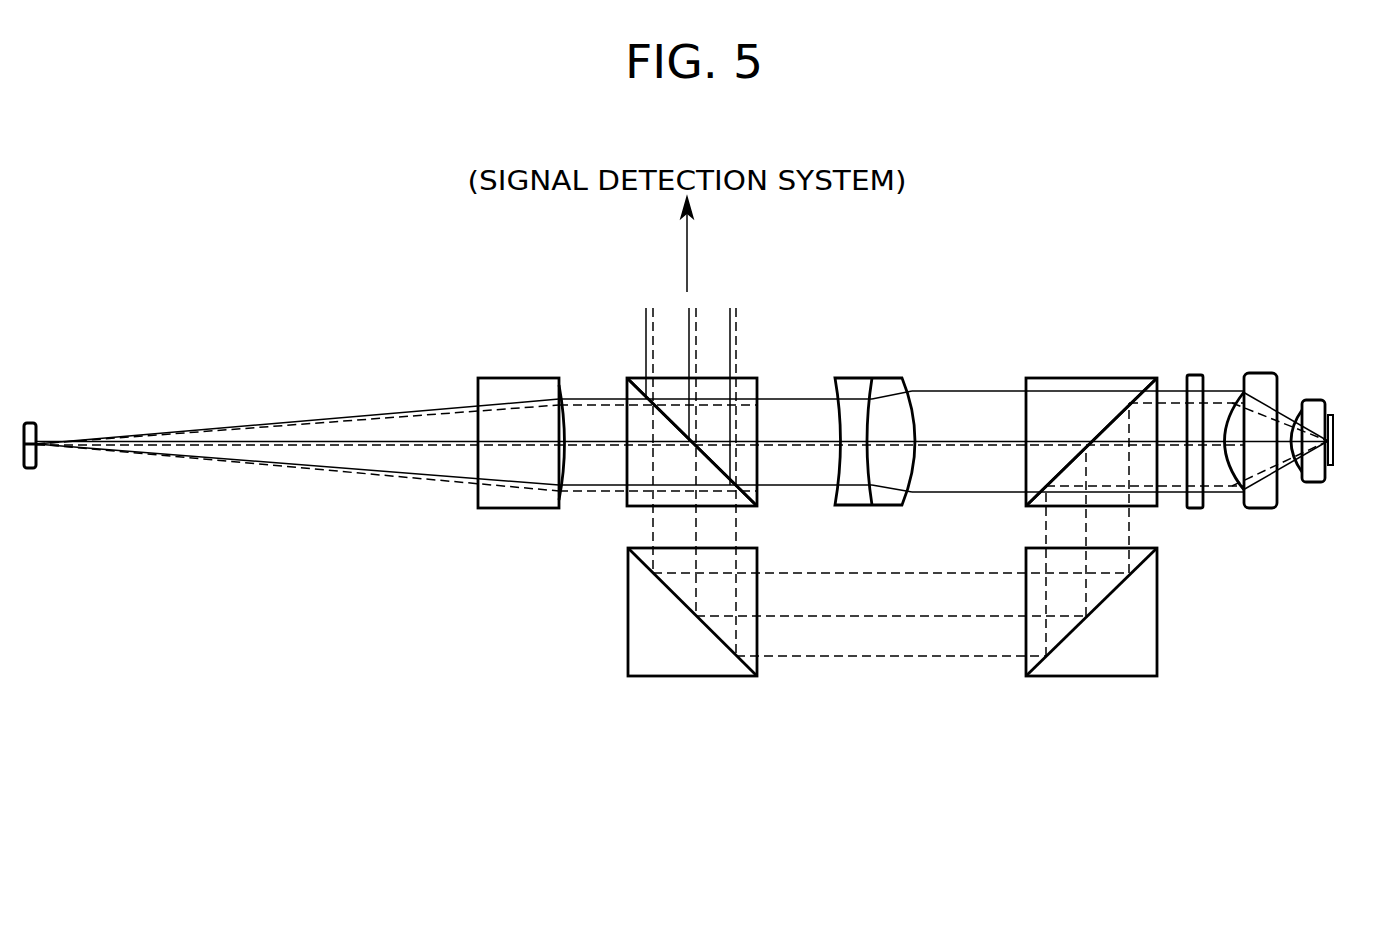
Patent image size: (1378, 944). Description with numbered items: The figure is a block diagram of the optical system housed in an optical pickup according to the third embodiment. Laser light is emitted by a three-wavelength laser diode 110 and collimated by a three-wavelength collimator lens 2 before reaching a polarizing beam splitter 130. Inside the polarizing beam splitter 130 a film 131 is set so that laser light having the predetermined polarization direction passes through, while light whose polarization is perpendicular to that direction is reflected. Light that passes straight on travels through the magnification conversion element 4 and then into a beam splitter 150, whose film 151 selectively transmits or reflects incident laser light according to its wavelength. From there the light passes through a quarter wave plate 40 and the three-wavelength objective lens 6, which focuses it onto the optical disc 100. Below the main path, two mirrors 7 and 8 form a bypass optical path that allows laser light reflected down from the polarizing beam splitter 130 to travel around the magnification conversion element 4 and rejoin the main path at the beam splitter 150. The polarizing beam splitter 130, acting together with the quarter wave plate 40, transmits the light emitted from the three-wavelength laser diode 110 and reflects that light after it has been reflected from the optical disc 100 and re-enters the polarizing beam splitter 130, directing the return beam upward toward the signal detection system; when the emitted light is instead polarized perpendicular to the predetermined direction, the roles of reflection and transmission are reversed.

The three-wavelength laser diode 110 is at (33, 422).
The three-wavelength collimator lens 2 is at (517, 378).
The polarizing beam splitter 130 is at (752, 378).
The film 131 is at (757, 506).
The magnification conversion element 4 is at (857, 378).
The beam splitter 150 is at (1070, 378).
The film 151 is at (1100, 426).
The quarter wave plate 40 is at (1192, 508).
The three-wavelength objective lens 6 is at (1287, 397).
The optical disc 100 is at (1333, 470).
The mirror 7 is at (657, 676).
The mirror 8 is at (1069, 676).